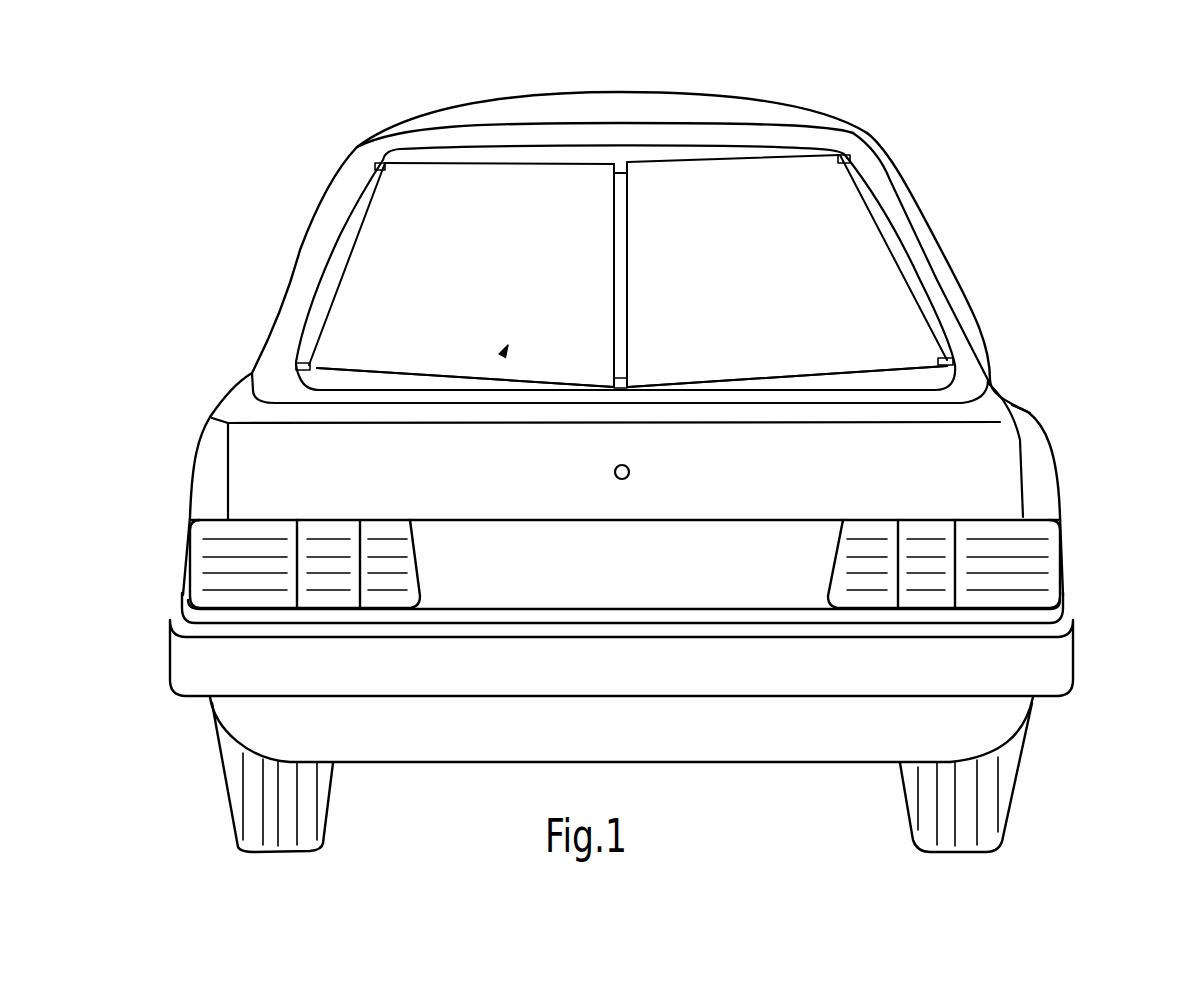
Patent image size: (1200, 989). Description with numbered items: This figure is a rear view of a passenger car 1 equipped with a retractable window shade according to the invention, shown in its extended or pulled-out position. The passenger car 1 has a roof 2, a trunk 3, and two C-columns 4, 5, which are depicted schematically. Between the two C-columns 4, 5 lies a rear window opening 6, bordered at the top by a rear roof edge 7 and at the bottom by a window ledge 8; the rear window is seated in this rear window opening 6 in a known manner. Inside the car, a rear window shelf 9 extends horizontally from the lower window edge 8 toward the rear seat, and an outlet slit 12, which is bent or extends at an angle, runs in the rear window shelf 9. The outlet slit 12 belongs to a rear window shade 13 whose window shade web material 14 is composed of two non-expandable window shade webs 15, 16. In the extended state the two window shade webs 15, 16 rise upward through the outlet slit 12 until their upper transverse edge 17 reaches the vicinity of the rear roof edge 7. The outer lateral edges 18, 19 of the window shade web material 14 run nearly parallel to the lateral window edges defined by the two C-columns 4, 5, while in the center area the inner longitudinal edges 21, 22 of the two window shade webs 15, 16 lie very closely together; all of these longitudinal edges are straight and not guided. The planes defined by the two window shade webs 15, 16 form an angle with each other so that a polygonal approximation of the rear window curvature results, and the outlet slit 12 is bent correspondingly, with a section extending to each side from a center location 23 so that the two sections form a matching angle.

The passenger car 1 is at (957, 122).
The roof 2 is at (710, 102).
The trunk 3 is at (1005, 455).
The C-column 4 is at (303, 280).
The C-column 5 is at (935, 264).
The rear window opening 6 is at (905, 239).
The rear roof edge 7 is at (637, 151).
The window ledge 8 is at (845, 383).
The rear window shelf 9 is at (323, 387).
The outlet slit 12 is at (953, 353).
The rear window shade 13 is at (505, 352).
The window shade web material 14 is at (578, 150).
The window shade web 15 is at (512, 272).
The window shade web 16 is at (780, 266).
The transverse edge 17 is at (499, 163).
The outer lateral edge 18 is at (345, 270).
The outer lateral edge 19 is at (897, 275).
The inner longitudinal edge 21 is at (613, 303).
The inner longitudinal edge 22 is at (630, 328).
The center location 23 is at (623, 392).